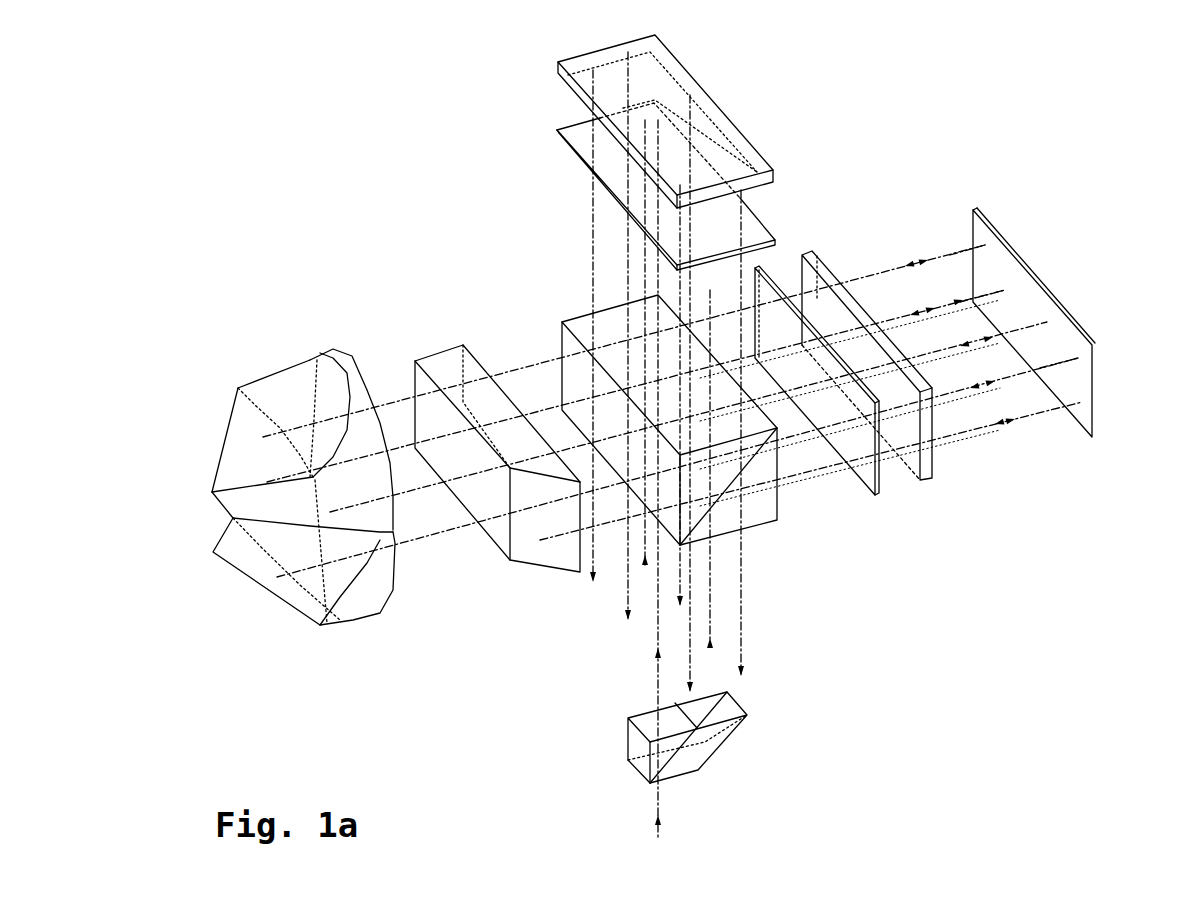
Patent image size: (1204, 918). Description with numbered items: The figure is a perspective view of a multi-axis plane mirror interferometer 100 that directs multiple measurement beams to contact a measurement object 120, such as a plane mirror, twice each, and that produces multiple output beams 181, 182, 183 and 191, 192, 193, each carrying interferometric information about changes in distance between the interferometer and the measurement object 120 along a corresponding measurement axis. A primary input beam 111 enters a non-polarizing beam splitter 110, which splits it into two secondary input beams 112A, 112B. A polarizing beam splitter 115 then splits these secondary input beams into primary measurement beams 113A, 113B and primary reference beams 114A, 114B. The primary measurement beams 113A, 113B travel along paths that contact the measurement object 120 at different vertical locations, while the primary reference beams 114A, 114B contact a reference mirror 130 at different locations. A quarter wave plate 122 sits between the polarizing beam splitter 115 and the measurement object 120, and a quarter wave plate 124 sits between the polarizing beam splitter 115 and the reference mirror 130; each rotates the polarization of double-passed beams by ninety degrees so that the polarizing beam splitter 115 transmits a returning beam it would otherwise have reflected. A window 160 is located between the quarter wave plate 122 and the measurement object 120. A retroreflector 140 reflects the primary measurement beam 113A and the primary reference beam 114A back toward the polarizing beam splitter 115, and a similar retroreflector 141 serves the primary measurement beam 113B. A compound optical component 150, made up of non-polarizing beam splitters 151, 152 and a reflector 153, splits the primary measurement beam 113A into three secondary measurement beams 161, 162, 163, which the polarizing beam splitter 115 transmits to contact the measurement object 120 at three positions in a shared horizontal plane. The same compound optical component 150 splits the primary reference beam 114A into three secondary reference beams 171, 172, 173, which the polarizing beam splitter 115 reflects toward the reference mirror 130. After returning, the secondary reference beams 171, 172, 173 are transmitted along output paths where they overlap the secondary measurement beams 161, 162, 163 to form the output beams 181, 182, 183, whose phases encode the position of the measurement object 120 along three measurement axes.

The multi-axis plane mirror interferometer 100 is at (318, 155).
The non-polarizing beam splitter 110 is at (683, 760).
The primary input beam 111 is at (662, 793).
The secondary input beam 112A is at (663, 672).
The secondary input beam 112B is at (713, 657).
The primary measurement beam 113A is at (984, 386).
The primary measurement beam 113B is at (1036, 318).
The primary reference beam 114A is at (662, 168).
The primary reference beam 114B is at (710, 157).
The polarizing beam splitter 115 is at (748, 520).
The measurement object 120 is at (1095, 420).
The quarter wave plate 122 is at (884, 498).
The quarter wave plate 124 is at (557, 131).
The reference mirror 130 is at (556, 64).
The retroreflector 140 is at (297, 615).
The retroreflector 141 is at (294, 357).
The compound optical component 150 is at (462, 565).
The non-polarizing beam splitter 151 is at (474, 363).
The non-polarizing beam splitter 152 is at (495, 407).
The reflector 153 is at (548, 560).
The window 160 is at (933, 482).
The secondary measurement beam 161 is at (900, 297).
The secondary measurement beam 162 is at (955, 352).
The secondary measurement beam 163 is at (1020, 422).
The secondary reference beam 171 is at (975, 215).
The secondary reference beam 172 is at (1008, 285).
The secondary reference beam 173 is at (1064, 357).
The output beam 181 is at (612, 572).
The output beam 182 is at (630, 600).
The output beam 183 is at (688, 625).
The output beam 191 is at (650, 540).
The output beam 192 is at (685, 580).
The output beam 193 is at (743, 625).